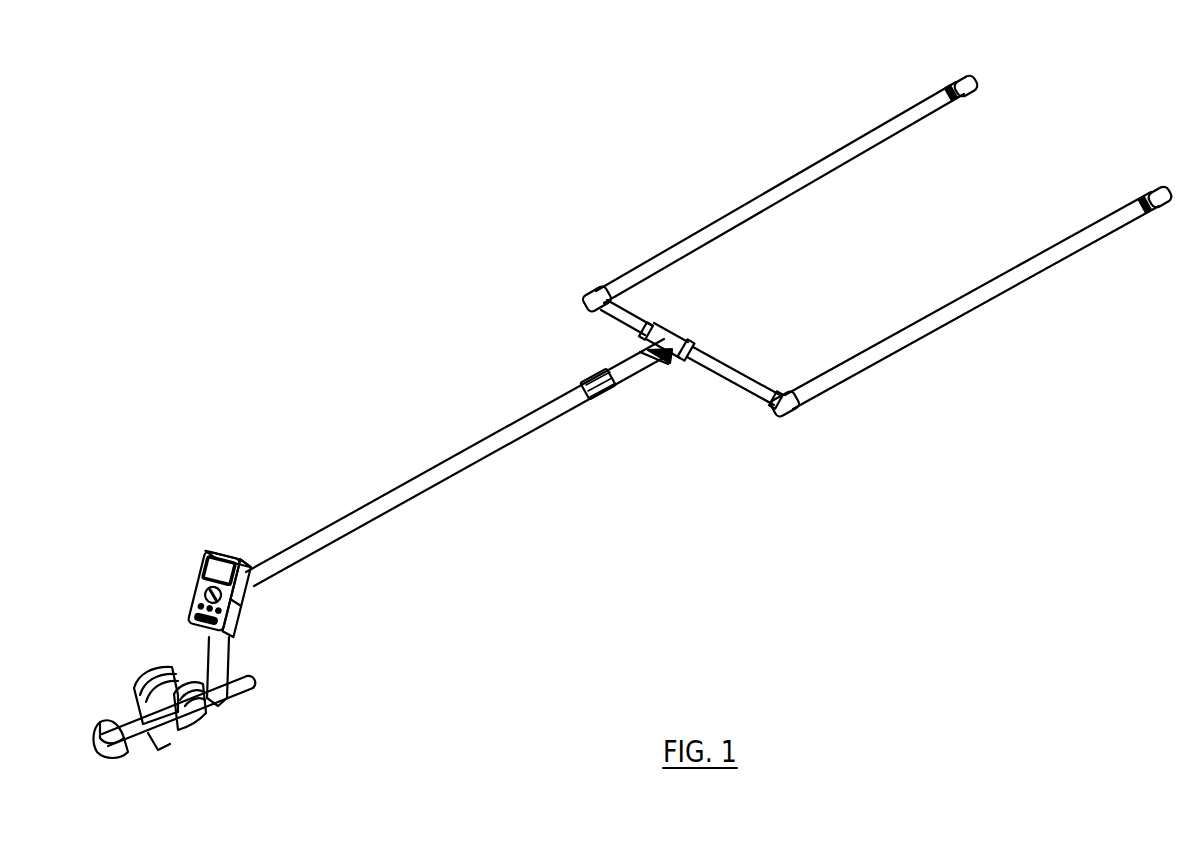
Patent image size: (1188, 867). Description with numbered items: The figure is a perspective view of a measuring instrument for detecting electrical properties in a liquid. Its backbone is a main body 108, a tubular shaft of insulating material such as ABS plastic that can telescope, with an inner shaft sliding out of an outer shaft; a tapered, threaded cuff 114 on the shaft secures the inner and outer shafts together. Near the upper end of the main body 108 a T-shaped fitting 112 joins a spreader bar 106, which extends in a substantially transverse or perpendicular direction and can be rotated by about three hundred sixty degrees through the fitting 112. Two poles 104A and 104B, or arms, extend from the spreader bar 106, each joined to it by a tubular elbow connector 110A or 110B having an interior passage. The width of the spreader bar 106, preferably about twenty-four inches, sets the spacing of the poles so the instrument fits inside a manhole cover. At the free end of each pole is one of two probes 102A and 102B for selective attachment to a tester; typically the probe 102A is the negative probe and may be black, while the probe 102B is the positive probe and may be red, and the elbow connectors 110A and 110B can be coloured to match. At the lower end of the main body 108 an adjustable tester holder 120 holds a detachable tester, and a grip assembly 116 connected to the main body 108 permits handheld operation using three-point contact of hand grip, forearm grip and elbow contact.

The probe 102A is at (960, 78).
The probe 102B is at (1150, 190).
The pole 104A is at (827, 157).
The pole 104B is at (963, 305).
The spreader bar 106 is at (723, 382).
The main body 108 is at (463, 470).
The elbow connector 110A is at (592, 294).
The elbow connector 110B is at (793, 413).
The fitting 112 is at (683, 332).
The cuff 114 is at (590, 375).
The grip assembly 116 is at (255, 655).
The tester holder 120 is at (220, 548).